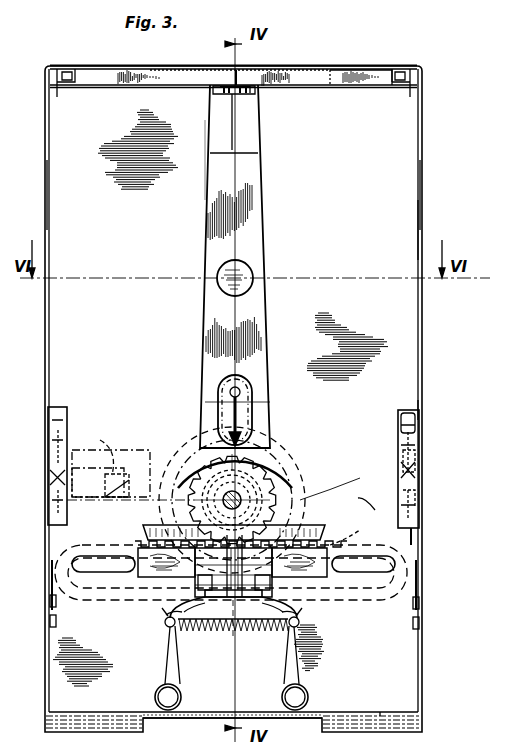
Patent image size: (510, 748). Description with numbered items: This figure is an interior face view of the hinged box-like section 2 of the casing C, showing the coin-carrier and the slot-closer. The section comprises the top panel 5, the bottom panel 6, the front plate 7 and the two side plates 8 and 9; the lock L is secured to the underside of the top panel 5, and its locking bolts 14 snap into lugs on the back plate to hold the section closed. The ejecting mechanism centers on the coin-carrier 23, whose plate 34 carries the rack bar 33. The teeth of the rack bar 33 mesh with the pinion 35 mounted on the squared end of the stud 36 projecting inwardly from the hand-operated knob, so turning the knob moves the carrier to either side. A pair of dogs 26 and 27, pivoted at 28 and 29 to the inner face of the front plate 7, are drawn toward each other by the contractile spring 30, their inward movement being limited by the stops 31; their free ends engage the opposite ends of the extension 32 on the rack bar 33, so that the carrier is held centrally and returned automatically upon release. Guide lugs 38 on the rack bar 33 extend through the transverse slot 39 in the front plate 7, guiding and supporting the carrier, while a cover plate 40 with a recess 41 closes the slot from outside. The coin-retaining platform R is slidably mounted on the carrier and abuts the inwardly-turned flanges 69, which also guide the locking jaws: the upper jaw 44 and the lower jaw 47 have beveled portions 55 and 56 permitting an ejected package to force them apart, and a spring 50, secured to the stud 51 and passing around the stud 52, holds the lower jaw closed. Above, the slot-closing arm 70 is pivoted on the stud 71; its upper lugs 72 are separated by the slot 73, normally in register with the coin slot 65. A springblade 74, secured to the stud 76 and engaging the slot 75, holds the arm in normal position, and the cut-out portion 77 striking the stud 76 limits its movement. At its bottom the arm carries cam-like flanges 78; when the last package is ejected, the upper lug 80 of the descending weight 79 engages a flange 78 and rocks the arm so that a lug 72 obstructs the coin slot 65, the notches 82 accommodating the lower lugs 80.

The casing C is at (422, 680).
The box-like section 2 is at (422, 405).
The top panel 5 is at (365, 68).
The bottom panel 6 is at (387, 706).
The front plate 7 is at (395, 235).
The side plate 8 is at (422, 188).
The side plate 9 is at (47, 193).
The locking bolts 14 is at (66, 69).
The coin-carrier 23 is at (245, 597).
The dog 26 is at (305, 652).
The dog 27 is at (177, 652).
The pivot 28 is at (300, 697).
The pivot 29 is at (172, 697).
The contractile spring 30 is at (245, 628).
The stops 31 is at (165, 624).
The extension 32 is at (231, 612).
The rack bar 33 is at (327, 564).
The plate 34 is at (178, 606).
The pinion 35 is at (275, 492).
The stud 36 is at (305, 500).
The guide lugs 38 is at (196, 590).
The transverse slot 39 is at (395, 564).
The cover plate 40 is at (292, 466).
The recess 41 is at (342, 545).
The upper jaw 44 is at (420, 427).
The lower jaw 47 is at (420, 536).
The spring 50 is at (52, 568).
The stud 51 is at (76, 628).
The stud 52 is at (64, 600).
The beveled portion 55 is at (420, 465).
The beveled portion 56 is at (420, 493).
The coin slot 65 is at (232, 80).
The inwardly-turned flanges 69 is at (48, 503).
The slot-closing arm 70 is at (262, 183).
The stud 71 is at (245, 272).
The lugs 72 is at (218, 94).
The slot 73 is at (233, 95).
The springblade 74 is at (218, 402).
The slot 75 is at (215, 442).
The stud 76 is at (241, 392).
The cut-out portion 77 is at (250, 382).
The cam-like flanges 78 is at (290, 438).
The weight 79 is at (122, 452).
The lugs 80 is at (165, 452).
The notches 82 is at (108, 444).
The lock L is at (325, 78).
The coin-retaining platform R is at (367, 495).